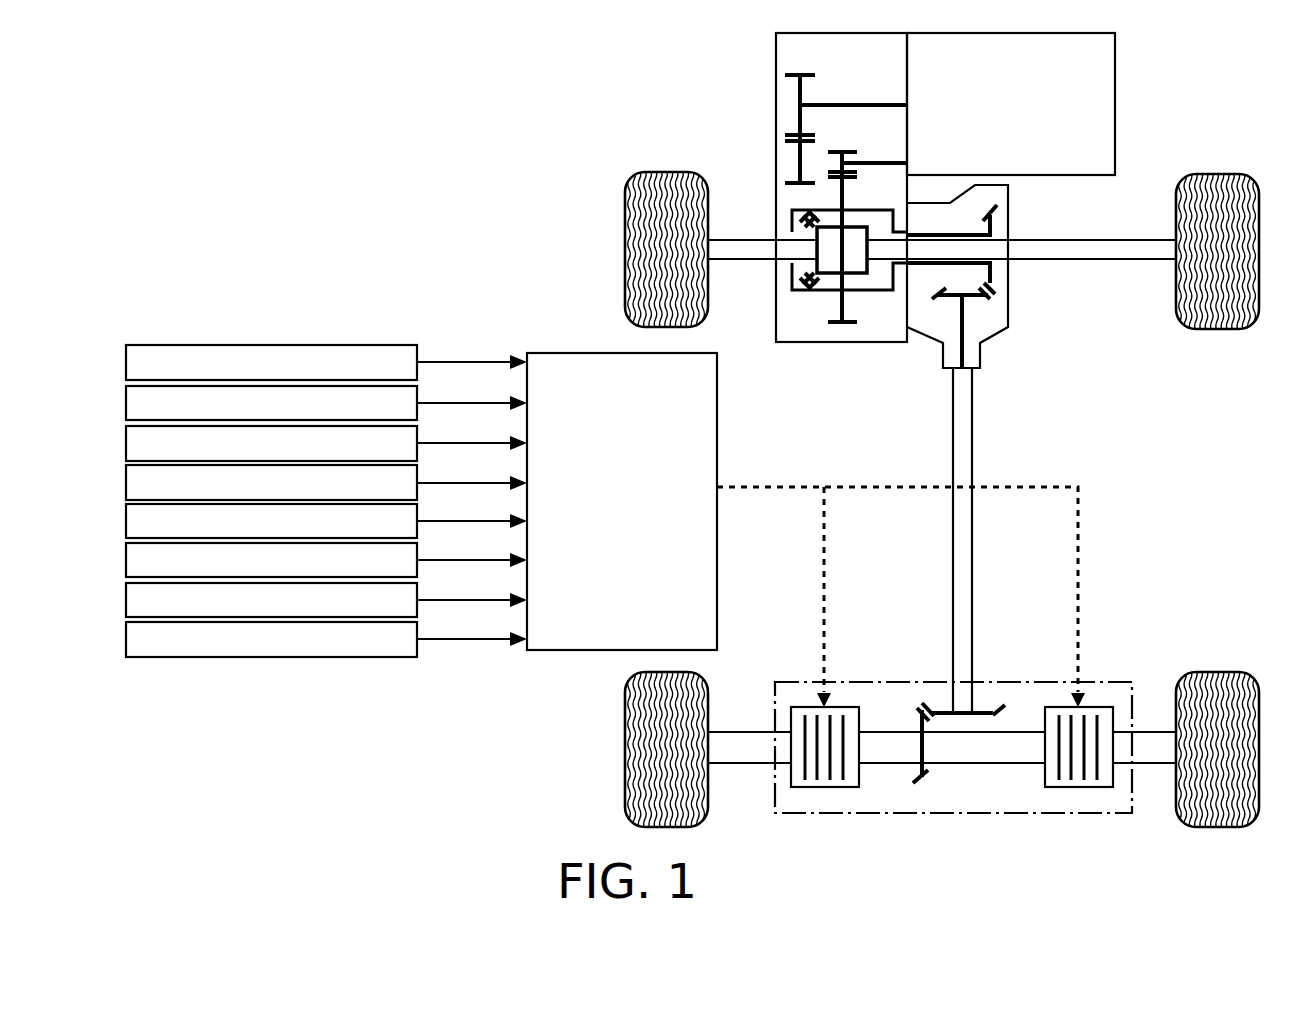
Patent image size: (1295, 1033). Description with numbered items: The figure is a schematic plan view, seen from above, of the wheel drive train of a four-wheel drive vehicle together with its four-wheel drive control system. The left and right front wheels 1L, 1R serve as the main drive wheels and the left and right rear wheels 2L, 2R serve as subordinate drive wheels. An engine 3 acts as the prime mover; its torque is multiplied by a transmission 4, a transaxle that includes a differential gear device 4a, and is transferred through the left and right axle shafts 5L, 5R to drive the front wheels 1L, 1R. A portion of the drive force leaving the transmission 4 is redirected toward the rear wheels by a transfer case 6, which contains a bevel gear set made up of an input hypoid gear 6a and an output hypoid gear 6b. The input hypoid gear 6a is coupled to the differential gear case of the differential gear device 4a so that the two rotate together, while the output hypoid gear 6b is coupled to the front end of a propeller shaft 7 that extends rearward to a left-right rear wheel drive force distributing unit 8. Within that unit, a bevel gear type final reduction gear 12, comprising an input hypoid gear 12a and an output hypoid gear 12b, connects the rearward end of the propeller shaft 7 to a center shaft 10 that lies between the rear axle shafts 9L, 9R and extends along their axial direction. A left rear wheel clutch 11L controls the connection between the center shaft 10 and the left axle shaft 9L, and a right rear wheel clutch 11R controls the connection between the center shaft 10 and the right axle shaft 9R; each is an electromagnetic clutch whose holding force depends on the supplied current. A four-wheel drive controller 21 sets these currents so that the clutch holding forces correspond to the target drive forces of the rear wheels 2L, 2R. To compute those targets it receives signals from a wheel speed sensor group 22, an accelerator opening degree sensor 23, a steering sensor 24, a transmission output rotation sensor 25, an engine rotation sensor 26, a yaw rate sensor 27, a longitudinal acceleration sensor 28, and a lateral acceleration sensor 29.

The left front wheel 1L is at (652, 172).
The right front wheel 1R is at (1222, 175).
The left rear wheel 2L is at (627, 700).
The right rear wheel 2R is at (1218, 672).
The engine 3 is at (1117, 50).
The transmission 4 is at (776, 55).
The differential gear device 4a is at (802, 291).
The left axle shaft 5L is at (745, 240).
The right axle shaft 5R is at (1103, 240).
The transfer case 6 is at (1008, 300).
The input hypoid gear 6a is at (992, 277).
The output hypoid gear 6b is at (972, 297).
The propeller shaft 7 is at (972, 420).
The left-right rear wheel drive force distributing unit 8 is at (1027, 682).
The left rear wheel axle shaft 9L is at (743, 763).
The right rear wheel axle shaft 9R is at (1158, 763).
The center shaft 10 is at (998, 765).
The left rear wheel clutch 11L is at (818, 787).
The right rear wheel clutch 11R is at (1088, 787).
The final reduction gear 12 is at (897, 628).
The input hypoid gear 12a is at (923, 710).
The output hypoid gear 12b is at (913, 718).
The four-wheel drive controller 21 is at (553, 353).
The wheel speed sensor group 22 is at (126, 362).
The accelerator opening degree sensor 23 is at (126, 403).
The steering sensor 24 is at (126, 443).
The transmission output rotation sensor 25 is at (126, 483).
The engine rotation sensor 26 is at (126, 521).
The yaw rate sensor 27 is at (126, 560).
The longitudinal acceleration sensor 28 is at (126, 600).
The lateral acceleration sensor 29 is at (126, 639).